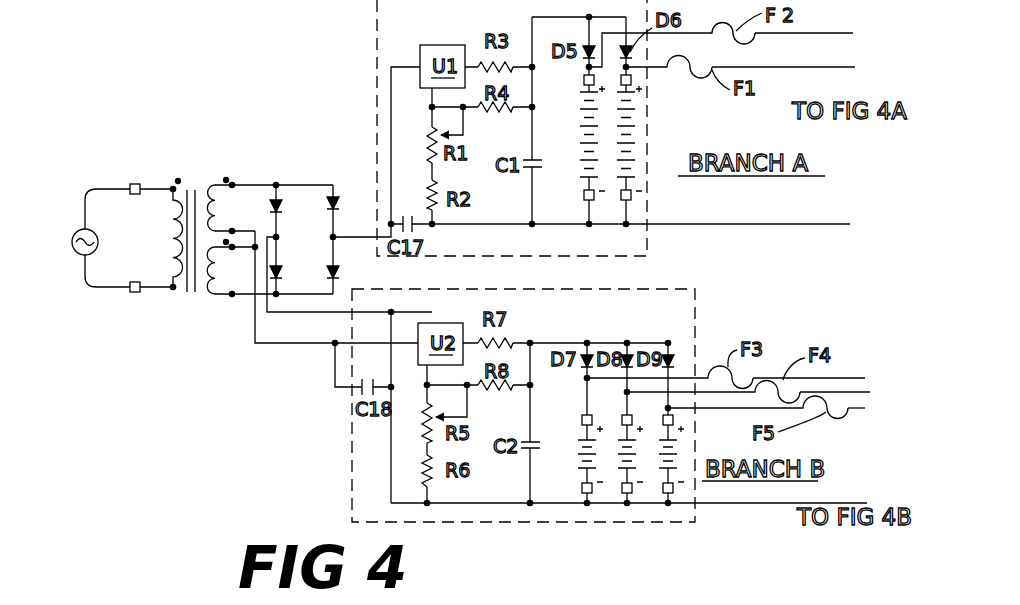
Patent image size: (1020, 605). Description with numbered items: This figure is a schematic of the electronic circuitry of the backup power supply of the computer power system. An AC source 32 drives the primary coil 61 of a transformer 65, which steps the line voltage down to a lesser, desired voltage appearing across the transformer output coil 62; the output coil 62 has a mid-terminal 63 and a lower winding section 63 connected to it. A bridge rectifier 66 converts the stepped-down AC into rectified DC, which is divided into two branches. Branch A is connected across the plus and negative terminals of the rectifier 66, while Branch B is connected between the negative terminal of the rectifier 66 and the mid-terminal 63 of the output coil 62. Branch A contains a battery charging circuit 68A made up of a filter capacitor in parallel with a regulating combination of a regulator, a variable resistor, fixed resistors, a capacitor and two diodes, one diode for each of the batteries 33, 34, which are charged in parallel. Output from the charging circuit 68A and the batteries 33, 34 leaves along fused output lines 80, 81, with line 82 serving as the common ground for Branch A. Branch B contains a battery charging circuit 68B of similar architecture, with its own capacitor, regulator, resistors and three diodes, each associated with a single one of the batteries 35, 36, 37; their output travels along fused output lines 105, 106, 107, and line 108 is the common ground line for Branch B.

The AC power source 32 is at (83, 256).
The transformer primary winding 61 is at (166, 220).
The transformer output coil 62 is at (203, 185).
The mid-terminal 63 is at (244, 253).
The transformer 65 is at (173, 299).
The bridge rectifier 66 is at (293, 182).
The battery charging circuit 68A is at (375, 22).
The battery charging circuit 68B is at (346, 486).
The battery 33 is at (574, 135).
The battery 34 is at (641, 118).
The battery 35 is at (573, 455).
The battery 36 is at (618, 472).
The battery 37 is at (657, 480).
The output line 80 is at (845, 33).
The output line 81 is at (836, 68).
The common ground line 82 is at (833, 224).
The output line 105 is at (848, 376).
The output line 106 is at (868, 392).
The output line 107 is at (868, 410).
The common ground line 108 is at (842, 503).